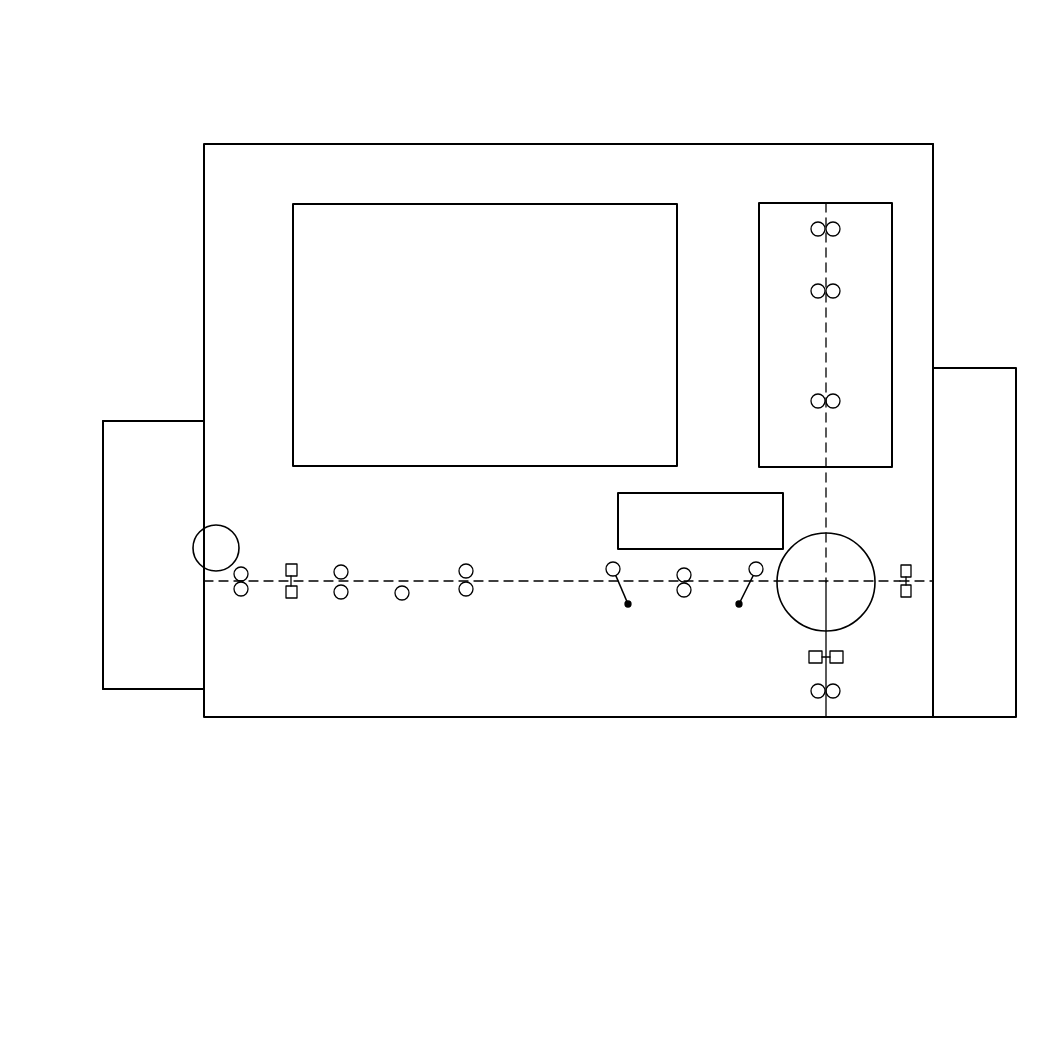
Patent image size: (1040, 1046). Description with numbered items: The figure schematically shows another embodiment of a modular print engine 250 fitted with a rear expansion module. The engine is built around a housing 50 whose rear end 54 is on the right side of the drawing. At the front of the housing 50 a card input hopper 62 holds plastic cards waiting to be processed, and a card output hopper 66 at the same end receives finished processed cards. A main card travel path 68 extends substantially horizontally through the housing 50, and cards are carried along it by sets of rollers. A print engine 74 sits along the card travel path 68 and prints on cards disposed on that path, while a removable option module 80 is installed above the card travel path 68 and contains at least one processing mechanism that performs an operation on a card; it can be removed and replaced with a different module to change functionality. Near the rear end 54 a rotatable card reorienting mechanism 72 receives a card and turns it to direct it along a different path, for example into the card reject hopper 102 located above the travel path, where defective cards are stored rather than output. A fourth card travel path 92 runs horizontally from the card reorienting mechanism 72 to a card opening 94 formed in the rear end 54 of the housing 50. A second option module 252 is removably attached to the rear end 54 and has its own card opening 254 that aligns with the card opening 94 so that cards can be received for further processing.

The modular print engine 250 is at (158, 248).
The housing 50 is at (293, 128).
The rear end 54 is at (934, 230).
The card input hopper 62 is at (148, 430).
The card output hopper 66 is at (112, 661).
The card travel path 68 is at (490, 578).
The card reorienting mechanism 72 is at (833, 534).
The print engine 74 is at (677, 317).
The removable option module 80 is at (759, 252).
The fourth card travel path 92 is at (887, 580).
The card opening 94 is at (932, 588).
The card reject hopper 102 is at (618, 520).
The second option module 252 is at (971, 380).
The card opening 254 is at (933, 578).